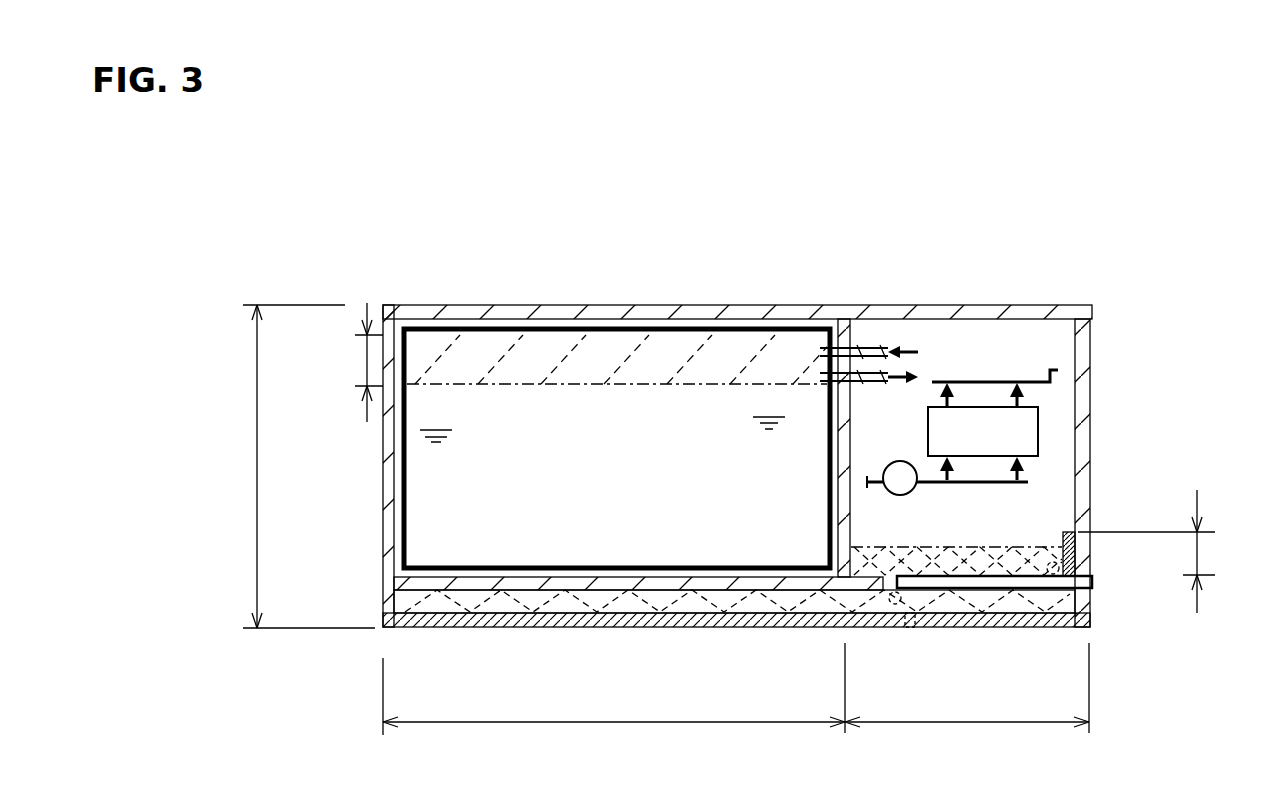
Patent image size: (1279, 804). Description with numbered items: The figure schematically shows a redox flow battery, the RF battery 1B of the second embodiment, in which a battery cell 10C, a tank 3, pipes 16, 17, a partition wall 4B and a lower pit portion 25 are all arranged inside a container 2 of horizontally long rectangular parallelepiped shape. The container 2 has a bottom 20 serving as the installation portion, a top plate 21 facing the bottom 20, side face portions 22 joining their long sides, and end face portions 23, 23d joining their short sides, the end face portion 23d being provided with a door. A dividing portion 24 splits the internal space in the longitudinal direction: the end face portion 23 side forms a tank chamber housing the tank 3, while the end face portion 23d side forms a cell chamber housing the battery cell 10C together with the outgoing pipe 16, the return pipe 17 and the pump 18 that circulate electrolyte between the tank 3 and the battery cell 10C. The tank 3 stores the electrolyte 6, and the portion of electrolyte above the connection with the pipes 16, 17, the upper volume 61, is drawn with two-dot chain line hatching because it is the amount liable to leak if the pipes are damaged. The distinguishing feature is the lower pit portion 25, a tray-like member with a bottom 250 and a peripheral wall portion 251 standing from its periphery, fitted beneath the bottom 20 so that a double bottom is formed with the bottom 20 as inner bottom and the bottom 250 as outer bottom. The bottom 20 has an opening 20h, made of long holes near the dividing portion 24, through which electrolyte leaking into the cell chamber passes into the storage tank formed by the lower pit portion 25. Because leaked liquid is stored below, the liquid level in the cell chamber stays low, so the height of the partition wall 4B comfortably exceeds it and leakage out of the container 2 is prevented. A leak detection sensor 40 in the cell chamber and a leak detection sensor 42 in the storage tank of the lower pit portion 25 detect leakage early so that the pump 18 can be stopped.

The RF battery 1B is at (428, 222).
The container 2 is at (1055, 295).
The tank 3 is at (553, 305).
The electrolyte 6 is at (400, 462).
The upper volume 61 is at (643, 338).
The top plate 21 is at (960, 305).
The side face portion 22 is at (1007, 340).
The end face portion 23 is at (392, 517).
The end face portion 23d is at (1080, 330).
The dividing portion 24 is at (841, 510).
The lower pit portion 25 is at (1097, 622).
The bottom 250 is at (735, 627).
The peripheral wall portion 251 is at (390, 600).
The return pipe 17 is at (858, 347).
The outgoing pipe 16 is at (880, 373).
The battery cell 10C is at (1040, 430).
The pump 18 is at (905, 497).
The bottom 20 is at (963, 575).
The opening 20h is at (894, 604).
The partition wall 4B is at (1077, 548).
The leak detection sensor 40 is at (1053, 576).
The leak detection sensor 42 is at (910, 628).